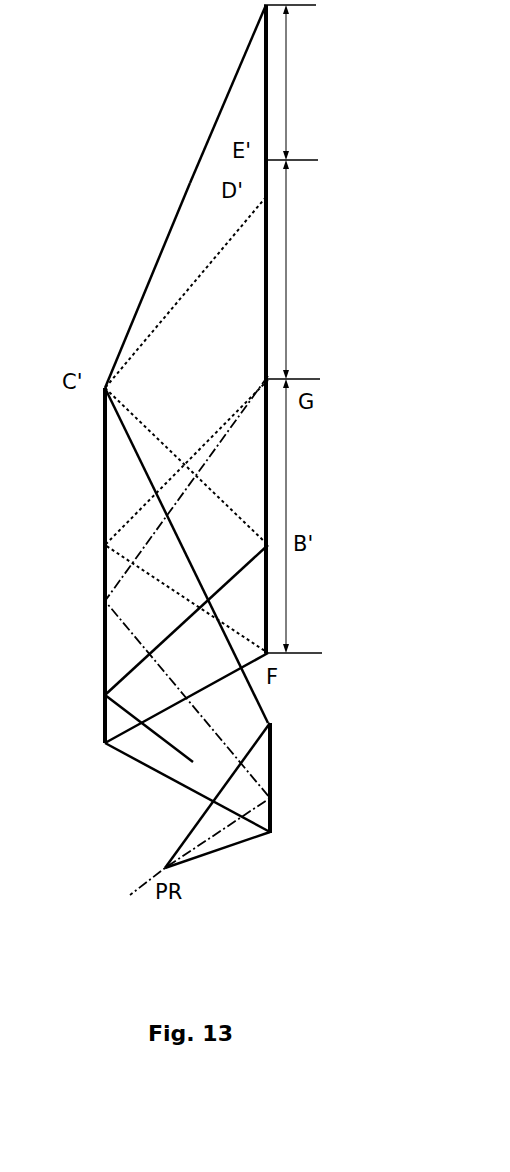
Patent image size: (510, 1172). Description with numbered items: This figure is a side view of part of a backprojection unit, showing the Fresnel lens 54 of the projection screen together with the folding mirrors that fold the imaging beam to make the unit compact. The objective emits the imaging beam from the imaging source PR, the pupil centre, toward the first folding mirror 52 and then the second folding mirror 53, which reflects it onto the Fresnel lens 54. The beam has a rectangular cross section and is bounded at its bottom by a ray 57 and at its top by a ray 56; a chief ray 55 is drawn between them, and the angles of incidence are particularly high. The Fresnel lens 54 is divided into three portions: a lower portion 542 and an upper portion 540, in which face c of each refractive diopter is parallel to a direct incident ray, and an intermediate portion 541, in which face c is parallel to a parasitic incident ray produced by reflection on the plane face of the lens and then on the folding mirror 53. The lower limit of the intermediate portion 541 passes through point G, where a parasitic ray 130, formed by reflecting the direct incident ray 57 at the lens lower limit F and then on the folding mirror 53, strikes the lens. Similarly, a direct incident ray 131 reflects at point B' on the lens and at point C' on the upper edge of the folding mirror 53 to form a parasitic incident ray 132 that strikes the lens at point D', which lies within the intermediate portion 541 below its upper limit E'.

The first folding mirror 52 is at (272, 803).
The second folding mirror 53 is at (104, 648).
The Fresnel lens 54 is at (258, 78).
The chief ray 55 is at (183, 487).
The ray 56 is at (129, 333).
The ray 57 is at (175, 780).
The parasitic ray 130 is at (140, 510).
The direct incident ray 131 is at (177, 750).
The parasitic incident ray 132 is at (210, 262).
The upper portion 540 is at (287, 107).
The intermediate portion 541 is at (287, 333).
The lower portion 542 is at (289, 587).